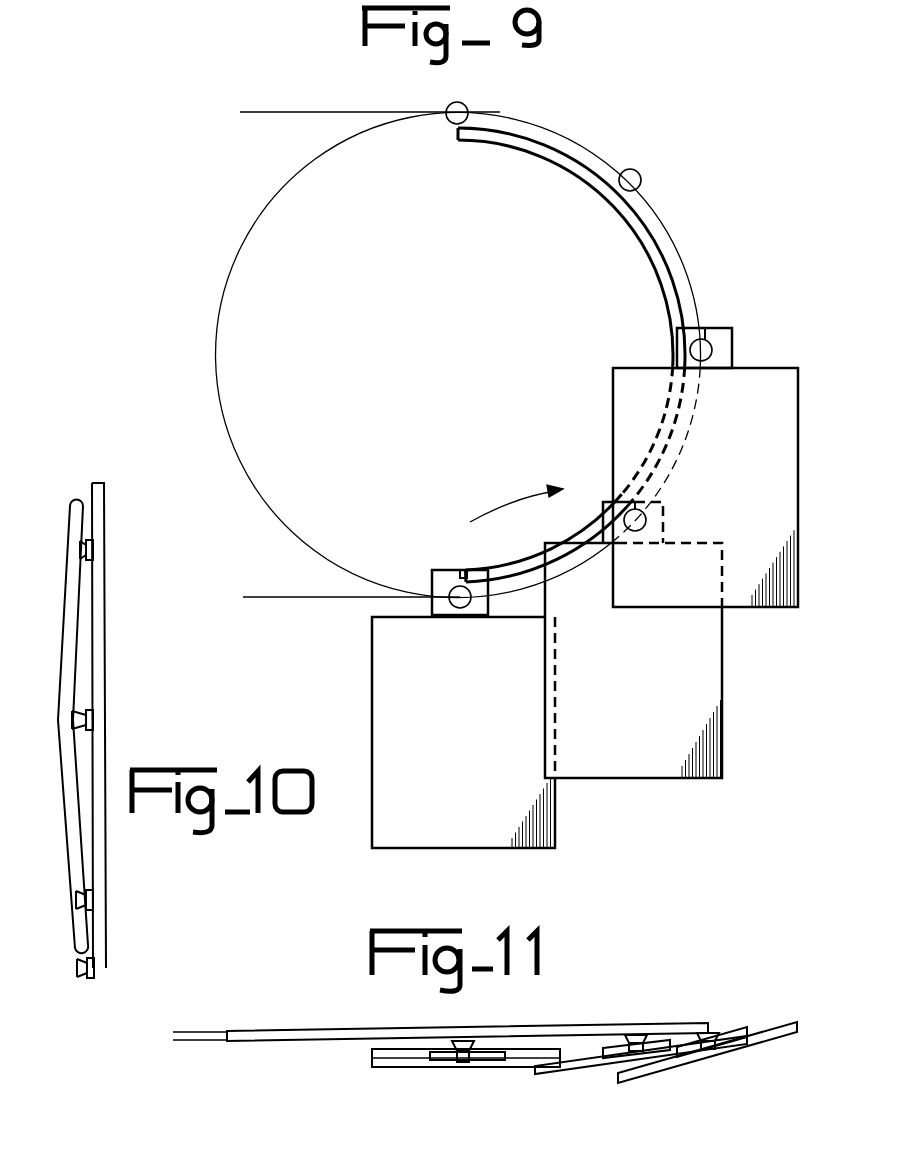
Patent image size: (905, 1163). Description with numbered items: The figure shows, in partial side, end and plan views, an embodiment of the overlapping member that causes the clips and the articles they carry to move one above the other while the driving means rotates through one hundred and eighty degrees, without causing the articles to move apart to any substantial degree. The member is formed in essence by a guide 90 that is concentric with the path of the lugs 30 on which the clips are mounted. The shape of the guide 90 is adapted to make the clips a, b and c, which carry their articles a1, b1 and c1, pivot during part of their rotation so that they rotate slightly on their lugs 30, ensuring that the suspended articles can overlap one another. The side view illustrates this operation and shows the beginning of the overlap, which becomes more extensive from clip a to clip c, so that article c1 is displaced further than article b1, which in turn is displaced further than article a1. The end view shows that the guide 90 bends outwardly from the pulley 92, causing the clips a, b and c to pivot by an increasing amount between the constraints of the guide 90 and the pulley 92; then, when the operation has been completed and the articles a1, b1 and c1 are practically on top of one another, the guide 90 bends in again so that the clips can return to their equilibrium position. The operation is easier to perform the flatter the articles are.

In FIG. 9, the lug 30 is at (459, 103).
In FIG. 10, the lug 30 is at (93, 728).
In FIG. 11, the lug 30 is at (466, 1040).
In FIG. 9, the guide 90 is at (650, 244).
In FIG. 10, the guide 90 is at (73, 612).
In FIG. 10, the pulley 92 is at (100, 638).
In FIG. 9, the clip a is at (443, 575).
In FIG. 11, the clip a is at (447, 1063).
In FIG. 9, the clip b is at (665, 510).
In FIG. 11, the clip b is at (610, 1068).
In FIG. 9, the clip c is at (735, 345).
In FIG. 11, the clip c is at (735, 1065).
In FIG. 9, the article a1 is at (430, 825).
In FIG. 11, the article a1 is at (372, 1068).
In FIG. 9, the article b1 is at (612, 778).
In FIG. 11, the article b1 is at (540, 1078).
In FIG. 9, the article c1 is at (733, 596).
In FIG. 11, the article c1 is at (645, 1085).